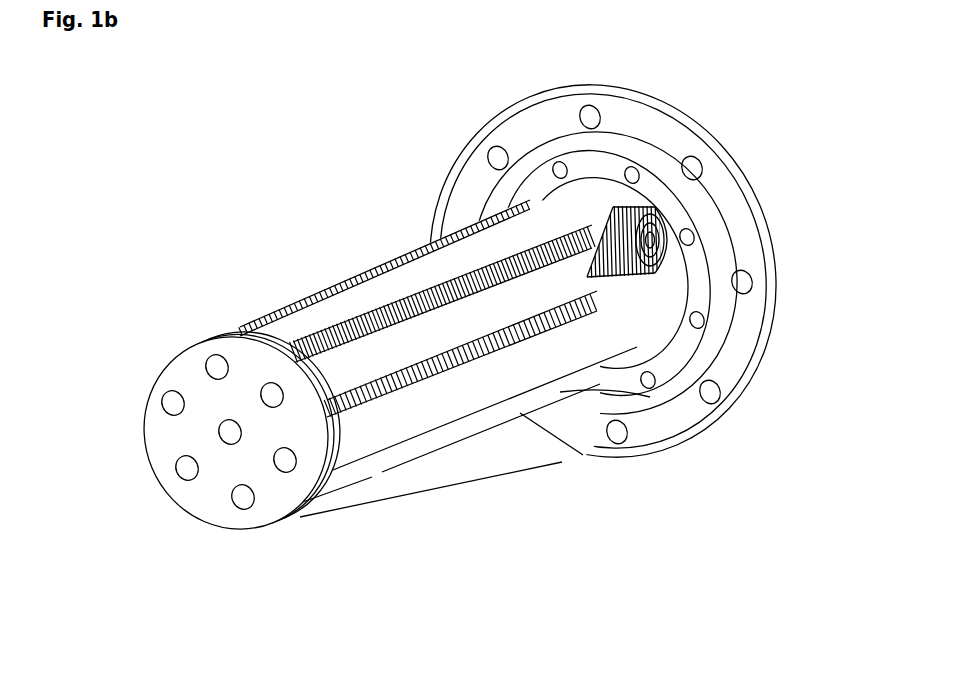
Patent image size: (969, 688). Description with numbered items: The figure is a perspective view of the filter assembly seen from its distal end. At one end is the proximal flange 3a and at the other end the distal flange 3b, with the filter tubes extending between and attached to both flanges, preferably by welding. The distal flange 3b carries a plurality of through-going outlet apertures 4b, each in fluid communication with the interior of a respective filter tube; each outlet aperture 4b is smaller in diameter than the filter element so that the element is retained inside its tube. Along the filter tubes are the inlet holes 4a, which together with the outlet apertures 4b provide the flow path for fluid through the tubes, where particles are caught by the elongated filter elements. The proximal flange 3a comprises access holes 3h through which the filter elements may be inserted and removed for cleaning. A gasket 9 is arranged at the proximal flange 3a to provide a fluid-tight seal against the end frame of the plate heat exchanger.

The proximal flange 3a is at (732, 372).
The distal flange 3b is at (207, 493).
The access holes 3h is at (643, 208).
The inlet holes 4a is at (397, 263).
The outlet apertures 4b is at (230, 432).
The gasket 9 is at (633, 400).